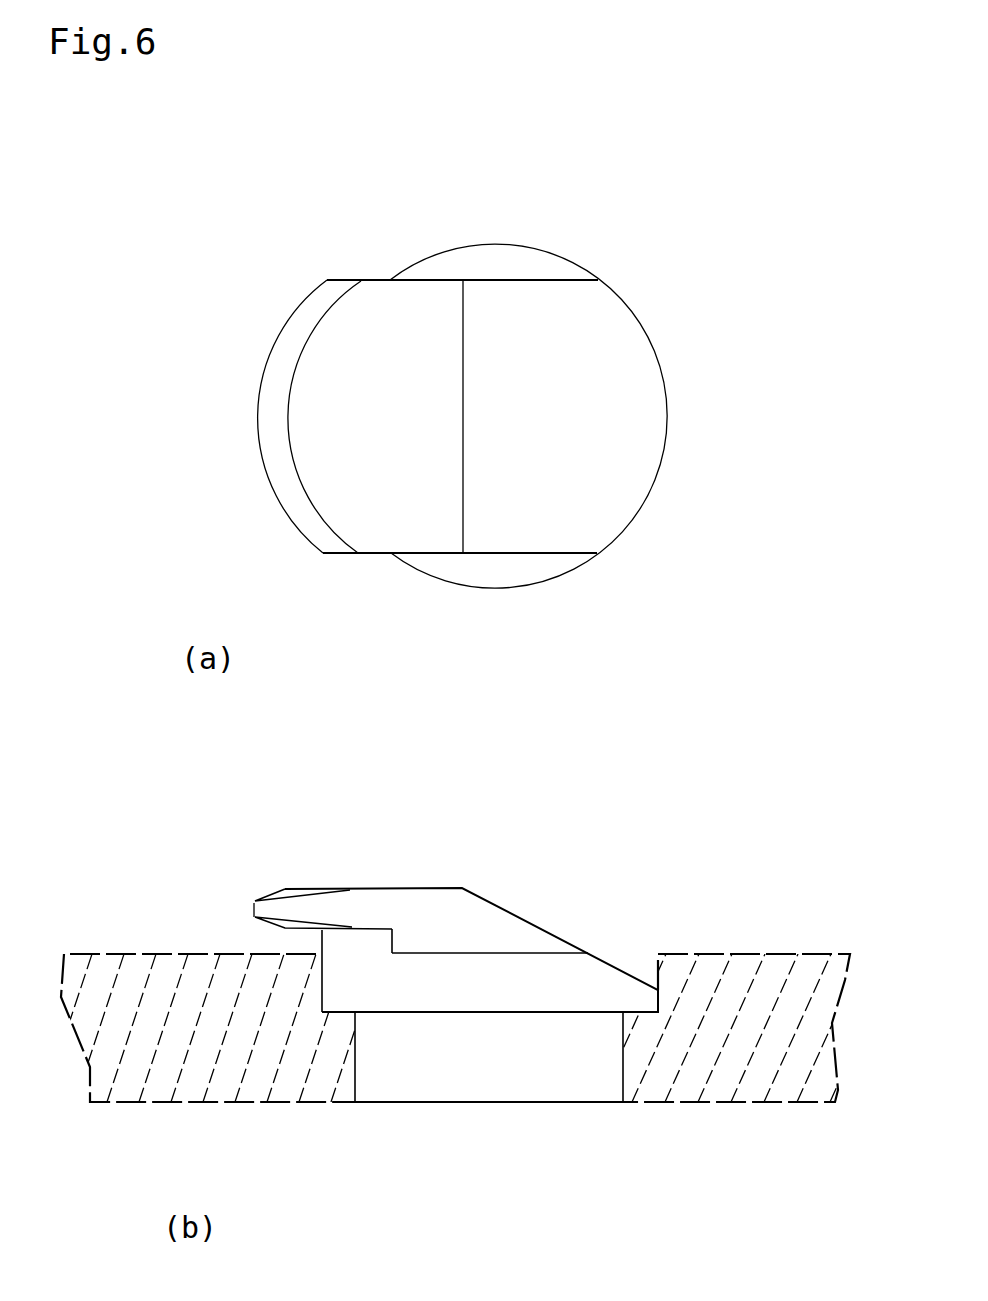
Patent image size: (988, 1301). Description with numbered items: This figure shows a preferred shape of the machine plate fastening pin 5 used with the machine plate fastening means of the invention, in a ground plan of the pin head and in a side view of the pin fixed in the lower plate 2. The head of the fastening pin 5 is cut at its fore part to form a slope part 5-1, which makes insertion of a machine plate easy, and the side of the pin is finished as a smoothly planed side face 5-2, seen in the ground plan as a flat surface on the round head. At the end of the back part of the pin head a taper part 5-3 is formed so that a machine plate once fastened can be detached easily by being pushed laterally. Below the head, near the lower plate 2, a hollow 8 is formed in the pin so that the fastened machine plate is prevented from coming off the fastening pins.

The machine plate fastening pin 5 is at (502, 154).
The slope part 5-1 is at (607, 350).
The smoothly planed side face 5-2 is at (433, 555).
The taper part 5-3 is at (272, 408).
The lower plate 2 is at (707, 953).
The hollow 8 is at (295, 938).